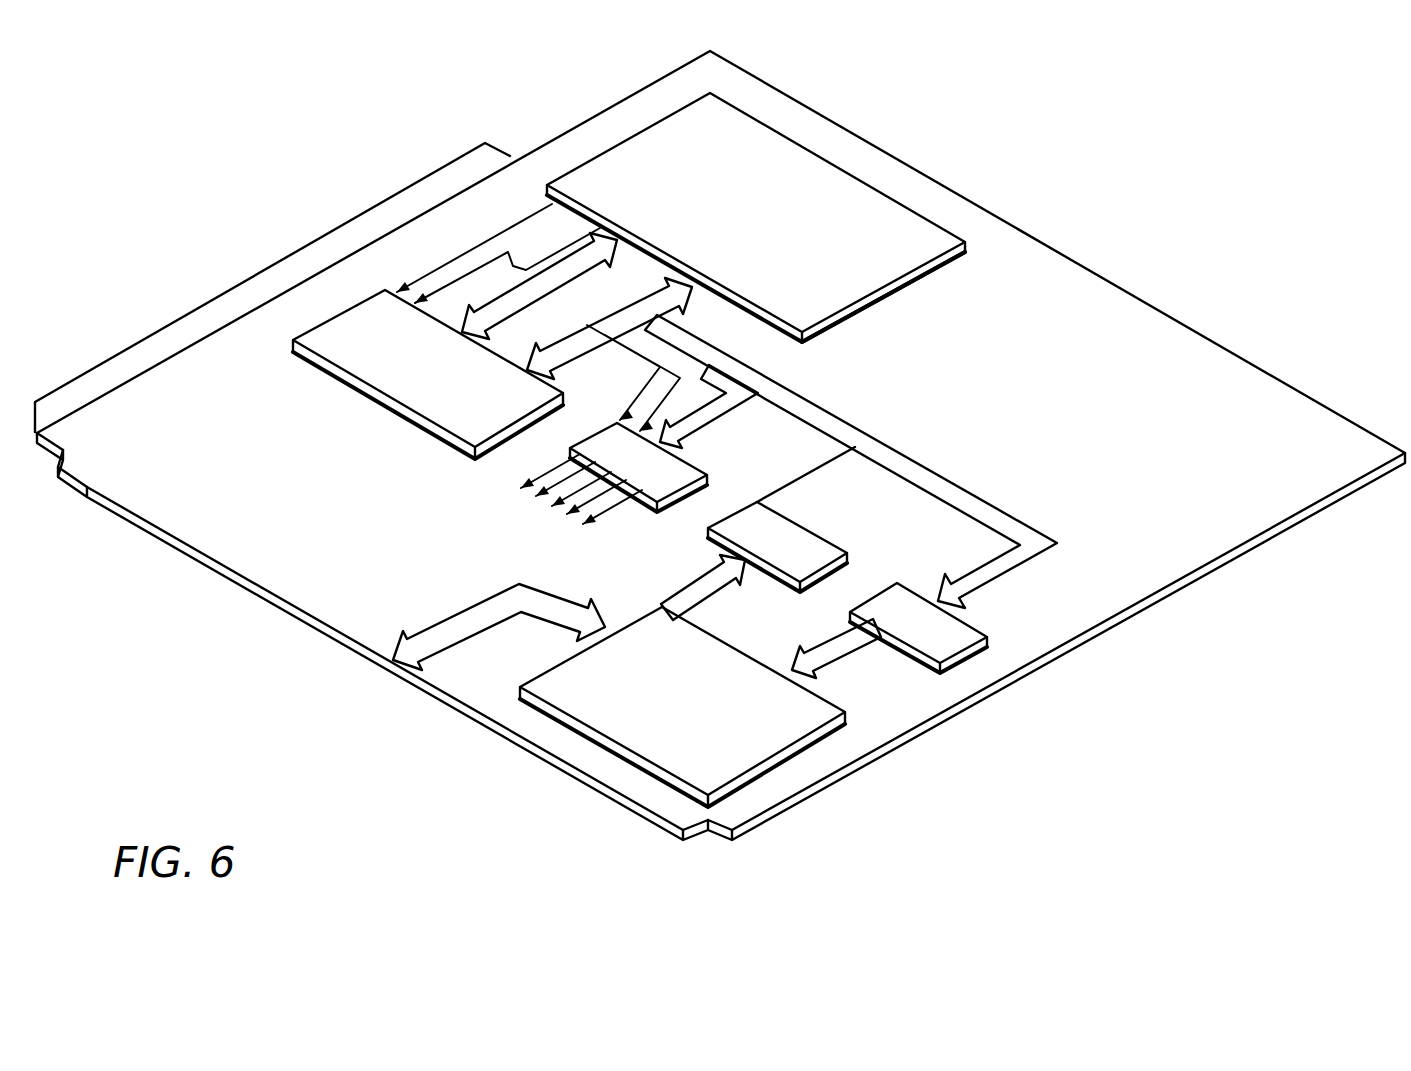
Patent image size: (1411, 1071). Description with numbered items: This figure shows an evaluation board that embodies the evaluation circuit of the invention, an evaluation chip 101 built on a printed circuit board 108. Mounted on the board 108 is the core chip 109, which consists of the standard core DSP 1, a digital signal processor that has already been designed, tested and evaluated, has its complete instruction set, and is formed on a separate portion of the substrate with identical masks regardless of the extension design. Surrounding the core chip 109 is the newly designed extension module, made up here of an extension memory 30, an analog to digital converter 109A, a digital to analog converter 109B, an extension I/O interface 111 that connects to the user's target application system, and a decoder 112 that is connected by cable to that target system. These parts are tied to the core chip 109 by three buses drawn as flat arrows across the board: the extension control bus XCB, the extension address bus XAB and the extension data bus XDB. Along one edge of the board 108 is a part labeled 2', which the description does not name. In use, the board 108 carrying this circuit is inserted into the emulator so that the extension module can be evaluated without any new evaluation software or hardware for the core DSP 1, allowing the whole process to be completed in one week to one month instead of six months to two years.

The DSP core 1 is at (897, 268).
The edge rail 2' is at (272, 287).
The extension memory 30 is at (372, 375).
The evaluation chip 101 is at (1078, 682).
The printed circuit board 108 is at (1188, 567).
The core chip 109 is at (760, 220).
The analog to digital converter 109A is at (772, 517).
The digital to analog converter 109B is at (962, 632).
The extension I/O interface 111 is at (678, 703).
The decoder 112 is at (560, 452).
The extension control bus XCB is at (525, 270).
The extension address bus XAB is at (700, 432).
The extension data bus XDB is at (875, 440).